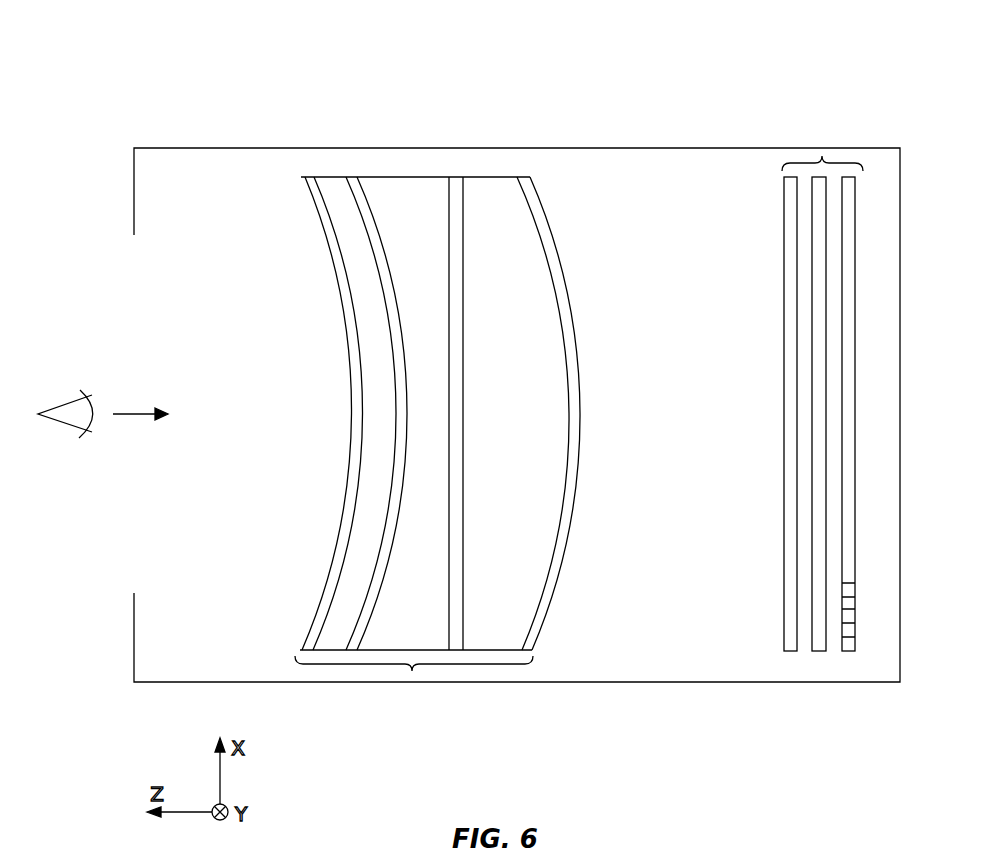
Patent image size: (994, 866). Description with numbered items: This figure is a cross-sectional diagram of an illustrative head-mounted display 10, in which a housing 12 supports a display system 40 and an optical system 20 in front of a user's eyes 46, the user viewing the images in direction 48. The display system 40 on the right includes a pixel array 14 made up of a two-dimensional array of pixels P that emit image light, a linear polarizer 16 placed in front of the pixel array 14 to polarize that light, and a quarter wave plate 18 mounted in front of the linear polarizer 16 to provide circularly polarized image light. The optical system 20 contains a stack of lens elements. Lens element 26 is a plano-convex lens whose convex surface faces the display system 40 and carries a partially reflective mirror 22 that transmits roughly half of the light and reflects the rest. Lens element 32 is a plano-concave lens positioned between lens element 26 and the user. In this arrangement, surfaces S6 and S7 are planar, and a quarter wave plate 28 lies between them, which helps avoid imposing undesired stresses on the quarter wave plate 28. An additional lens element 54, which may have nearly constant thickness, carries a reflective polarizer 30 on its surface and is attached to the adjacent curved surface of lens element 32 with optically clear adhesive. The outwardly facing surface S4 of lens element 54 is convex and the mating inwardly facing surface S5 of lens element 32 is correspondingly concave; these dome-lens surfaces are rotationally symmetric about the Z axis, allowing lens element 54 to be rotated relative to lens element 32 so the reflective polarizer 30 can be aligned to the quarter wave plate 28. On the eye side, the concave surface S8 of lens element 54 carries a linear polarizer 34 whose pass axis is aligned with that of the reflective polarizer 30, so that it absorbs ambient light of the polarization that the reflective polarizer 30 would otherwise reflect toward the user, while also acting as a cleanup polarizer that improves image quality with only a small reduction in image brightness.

The head-mounted display 10 is at (720, 58).
The housing 12 is at (772, 147).
The pixel array 14 is at (848, 654).
The linear polarizer 16 is at (820, 654).
The quarter wave plate 18 is at (790, 654).
The optical system 20 is at (412, 672).
The partially reflective mirror 22 is at (532, 185).
The lens element 26 is at (490, 188).
The quarter wave plate 28 is at (455, 187).
The reflective polarizer 30 is at (365, 190).
The lens element 32 is at (415, 187).
The linear polarizer 34 is at (316, 198).
The display system 40 is at (822, 160).
The user's eyes 46 is at (72, 403).
The direction 48 is at (135, 414).
The lens element 54 is at (335, 188).
The pixels P is at (850, 630).
The outwardly facing surface S4 is at (365, 600).
The inwardly facing surface S5 is at (384, 587).
The surface S6 is at (453, 595).
The surface S7 is at (465, 570).
The concave surface S8 is at (320, 628).